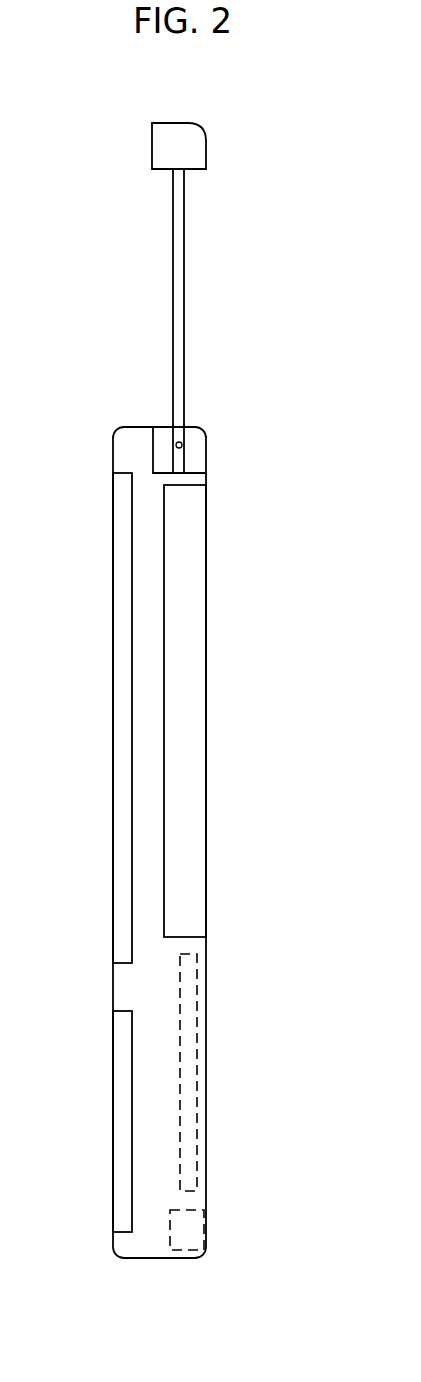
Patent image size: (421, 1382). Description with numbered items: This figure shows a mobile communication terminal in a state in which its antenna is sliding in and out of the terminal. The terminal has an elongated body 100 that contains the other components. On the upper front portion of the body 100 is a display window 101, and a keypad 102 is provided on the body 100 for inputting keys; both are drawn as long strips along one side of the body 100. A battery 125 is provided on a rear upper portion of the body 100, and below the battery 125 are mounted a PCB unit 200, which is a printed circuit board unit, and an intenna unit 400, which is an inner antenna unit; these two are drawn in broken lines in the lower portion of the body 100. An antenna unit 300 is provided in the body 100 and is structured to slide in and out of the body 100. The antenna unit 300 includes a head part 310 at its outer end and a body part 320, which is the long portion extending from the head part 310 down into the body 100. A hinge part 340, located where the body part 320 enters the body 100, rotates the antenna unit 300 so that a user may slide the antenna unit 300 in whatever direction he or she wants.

The body 100 is at (228, 498).
The display window 101 is at (123, 660).
The keypad 102 is at (125, 1128).
The battery 125 is at (195, 552).
The PCB unit 200 is at (190, 1129).
The antenna unit 300 is at (229, 298).
The head part 310 is at (195, 149).
The body part 320 is at (178, 231).
The hinge part 340 is at (182, 445).
The intenna unit 400 is at (193, 1237).